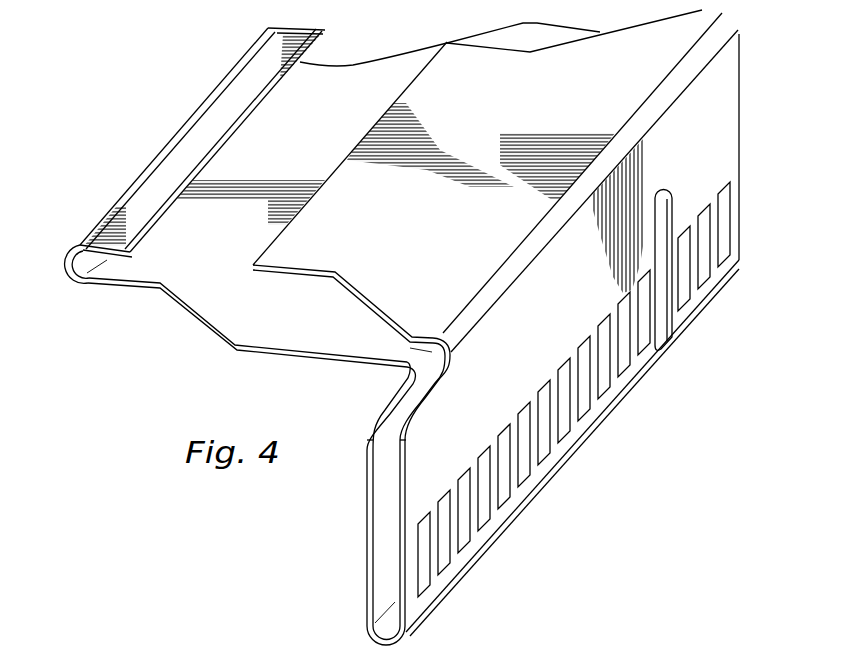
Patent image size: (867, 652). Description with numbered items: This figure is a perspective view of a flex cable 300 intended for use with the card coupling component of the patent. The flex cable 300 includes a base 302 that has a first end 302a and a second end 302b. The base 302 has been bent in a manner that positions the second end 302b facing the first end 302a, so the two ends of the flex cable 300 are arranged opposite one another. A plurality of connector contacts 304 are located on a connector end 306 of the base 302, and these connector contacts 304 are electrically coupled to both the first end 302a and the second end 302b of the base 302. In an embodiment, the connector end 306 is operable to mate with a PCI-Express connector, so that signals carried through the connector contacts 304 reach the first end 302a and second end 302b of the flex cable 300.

The flex cable 300 is at (100, 168).
The base 302 is at (230, 325).
The first end 302a is at (260, 108).
The second end 302b is at (430, 73).
The connector contacts 304 is at (690, 278).
The connector end 306 is at (468, 567).